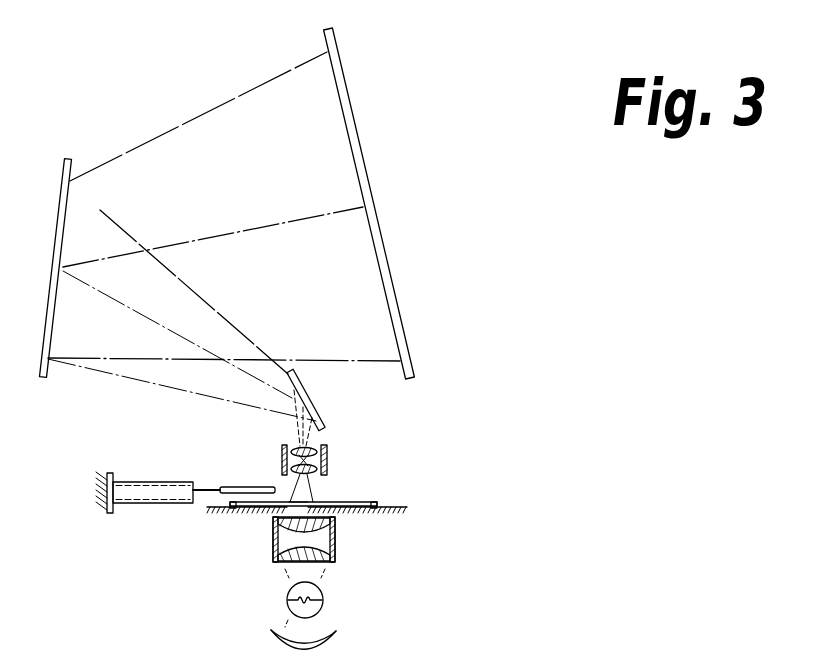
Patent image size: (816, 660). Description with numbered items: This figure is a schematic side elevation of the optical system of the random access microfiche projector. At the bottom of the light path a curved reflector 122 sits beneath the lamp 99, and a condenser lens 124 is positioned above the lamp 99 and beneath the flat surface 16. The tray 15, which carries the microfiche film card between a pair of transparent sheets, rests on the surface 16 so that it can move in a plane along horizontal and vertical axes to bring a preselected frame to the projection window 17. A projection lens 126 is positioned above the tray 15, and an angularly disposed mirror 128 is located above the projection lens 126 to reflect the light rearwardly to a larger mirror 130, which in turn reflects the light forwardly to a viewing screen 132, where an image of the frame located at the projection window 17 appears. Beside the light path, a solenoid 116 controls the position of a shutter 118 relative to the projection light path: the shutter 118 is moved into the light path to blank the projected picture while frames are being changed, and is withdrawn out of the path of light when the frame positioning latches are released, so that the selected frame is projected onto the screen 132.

The larger mirror 130 is at (62, 191).
The viewing screen 132 is at (346, 82).
The angularly disposed mirror 128 is at (308, 400).
The projection lens 126 is at (327, 460).
The solenoid 116 is at (162, 482).
The shutter 118 is at (230, 487).
The tray 15 is at (372, 503).
The projection window 17 is at (310, 500).
The flat surface 16 is at (402, 507).
The condenser lens 124 is at (335, 540).
The lamp 99 is at (323, 600).
The curved reflector 122 is at (336, 633).